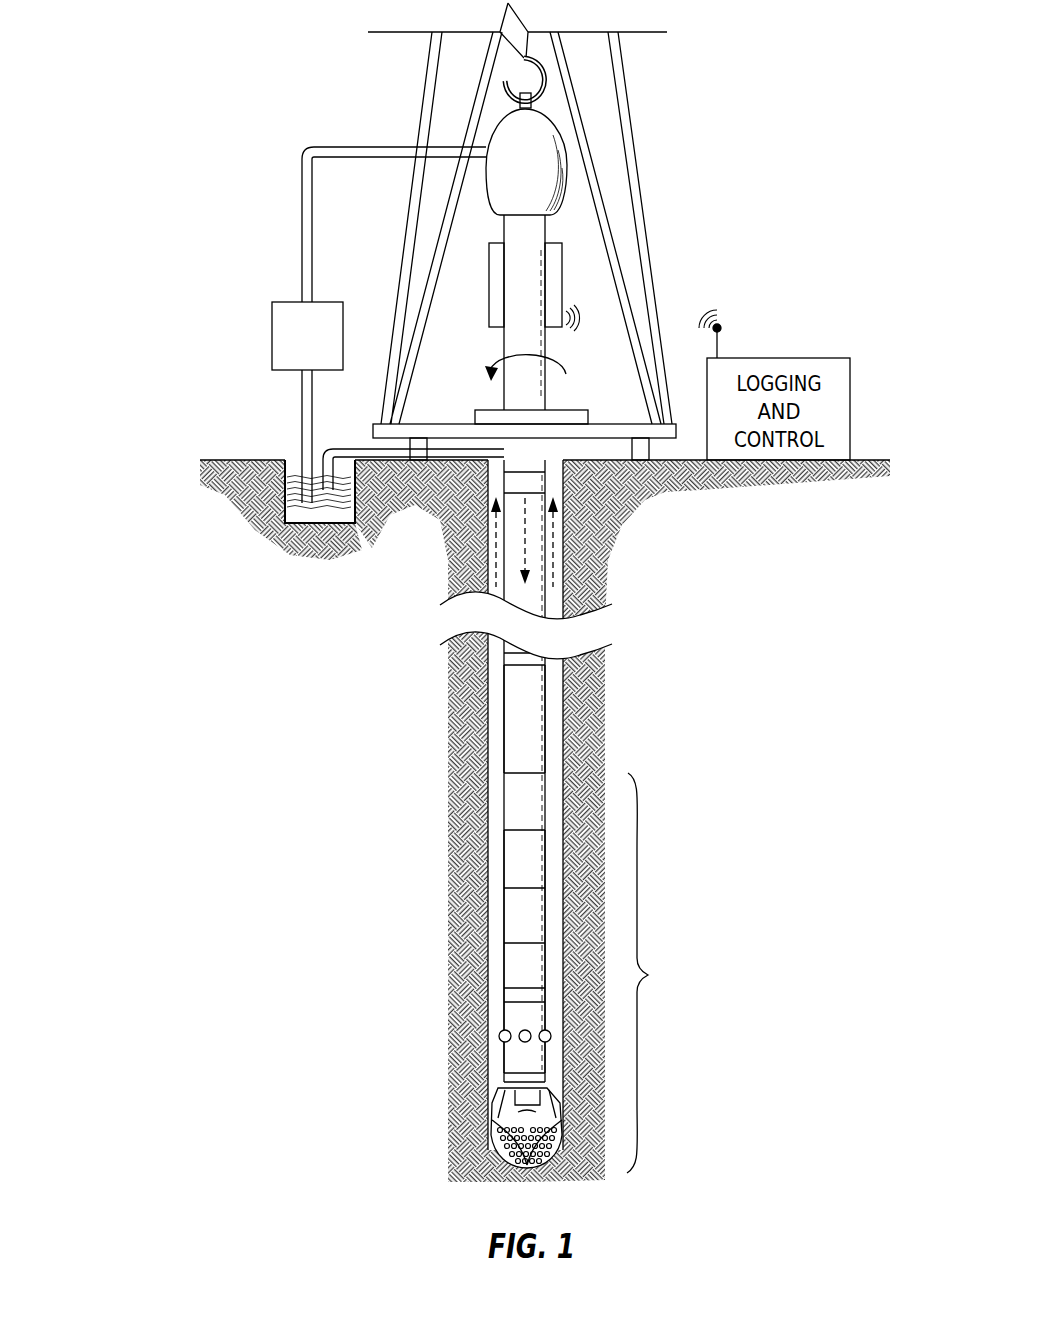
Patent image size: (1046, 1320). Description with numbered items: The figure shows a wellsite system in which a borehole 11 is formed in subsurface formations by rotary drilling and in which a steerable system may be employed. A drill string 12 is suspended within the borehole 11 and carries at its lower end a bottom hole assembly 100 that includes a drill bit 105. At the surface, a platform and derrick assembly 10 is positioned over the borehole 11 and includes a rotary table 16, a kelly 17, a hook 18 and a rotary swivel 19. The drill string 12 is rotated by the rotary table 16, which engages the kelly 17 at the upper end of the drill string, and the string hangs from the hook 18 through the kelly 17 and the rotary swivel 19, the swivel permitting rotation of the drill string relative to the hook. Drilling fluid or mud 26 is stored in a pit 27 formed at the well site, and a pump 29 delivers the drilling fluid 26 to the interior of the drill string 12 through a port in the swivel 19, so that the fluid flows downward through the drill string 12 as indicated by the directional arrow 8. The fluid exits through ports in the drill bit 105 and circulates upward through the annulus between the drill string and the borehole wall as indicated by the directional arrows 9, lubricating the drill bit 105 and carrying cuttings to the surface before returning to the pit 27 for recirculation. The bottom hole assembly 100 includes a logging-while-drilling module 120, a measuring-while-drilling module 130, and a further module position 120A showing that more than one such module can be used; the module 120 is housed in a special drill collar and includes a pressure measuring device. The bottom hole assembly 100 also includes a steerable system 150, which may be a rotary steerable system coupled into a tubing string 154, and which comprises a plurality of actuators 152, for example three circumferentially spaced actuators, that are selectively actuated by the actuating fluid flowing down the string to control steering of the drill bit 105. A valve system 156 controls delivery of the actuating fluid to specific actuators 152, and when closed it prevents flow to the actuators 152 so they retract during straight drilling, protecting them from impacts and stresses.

The platform and derrick assembly 10 is at (652, 124).
The hook 18 is at (522, 65).
The rotary swivel 19 is at (500, 191).
The pump 29 is at (289, 371).
The pit 27 is at (293, 462).
The drilling fluid or mud 26 is at (318, 515).
The kelly 17 is at (511, 403).
The rotary table 16 is at (572, 415).
The borehole 11 is at (556, 460).
The drill string 12 is at (526, 454).
The directional arrows 9 is at (495, 528).
The directional arrow 8 is at (522, 547).
The bottom hole assembly 100 is at (663, 973).
The tubing string 154 is at (515, 733).
The logging-while-drilling module 120 is at (512, 860).
The measuring-while-drilling module 130 is at (512, 918).
The LWD and/or MWD module 120A is at (513, 968).
The valve system 156 is at (513, 997).
The steerable system 150 is at (513, 1025).
The actuators 152 is at (539, 1041).
The drill bit 105 is at (498, 1118).